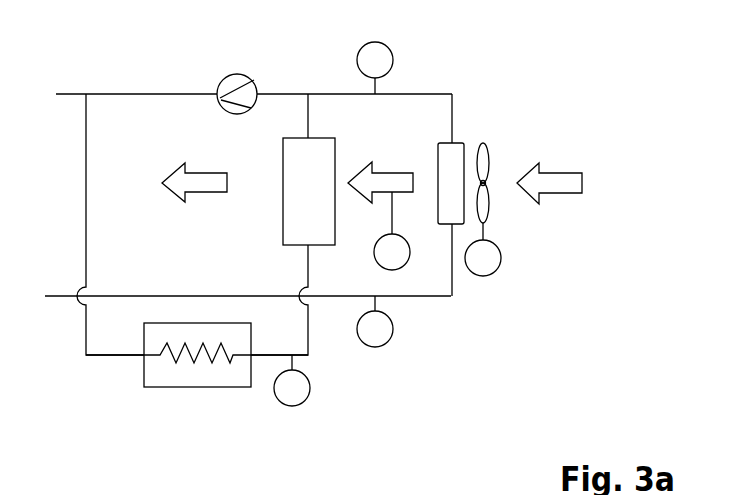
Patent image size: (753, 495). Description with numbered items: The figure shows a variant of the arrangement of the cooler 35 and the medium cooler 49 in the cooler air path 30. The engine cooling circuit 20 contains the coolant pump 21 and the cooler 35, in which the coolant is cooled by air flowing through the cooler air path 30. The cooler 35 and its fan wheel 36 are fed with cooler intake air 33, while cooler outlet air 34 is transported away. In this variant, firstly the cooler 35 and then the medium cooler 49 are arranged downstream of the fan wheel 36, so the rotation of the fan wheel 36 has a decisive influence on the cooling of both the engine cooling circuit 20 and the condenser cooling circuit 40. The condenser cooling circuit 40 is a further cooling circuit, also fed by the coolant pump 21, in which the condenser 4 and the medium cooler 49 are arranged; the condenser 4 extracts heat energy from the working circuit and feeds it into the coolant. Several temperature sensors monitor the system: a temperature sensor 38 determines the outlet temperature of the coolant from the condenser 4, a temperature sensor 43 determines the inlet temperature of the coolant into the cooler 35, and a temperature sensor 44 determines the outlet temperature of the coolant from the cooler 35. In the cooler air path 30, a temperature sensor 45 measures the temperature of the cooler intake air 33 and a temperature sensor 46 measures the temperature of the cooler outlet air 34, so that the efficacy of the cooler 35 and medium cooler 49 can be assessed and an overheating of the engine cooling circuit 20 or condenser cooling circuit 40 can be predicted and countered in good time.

The engine cooling circuit 20 is at (148, 79).
The coolant pump 21 is at (237, 114).
The cooler air path 30 is at (476, 82).
The cooler intake air 33 is at (583, 183).
The cooler outlet air 34 is at (162, 184).
The cooler 35 is at (437, 142).
The fan wheel 36 is at (488, 155).
The temperature sensor 38 is at (306, 400).
The condenser cooling circuit 40 is at (146, 410).
The temperature sensor 43 is at (390, 341).
The temperature sensor 44 is at (390, 50).
The temperature sensor 45 is at (496, 270).
The temperature sensor 46 is at (410, 256).
The medium cooler 49 is at (282, 214).
The condenser 4 is at (197, 387).